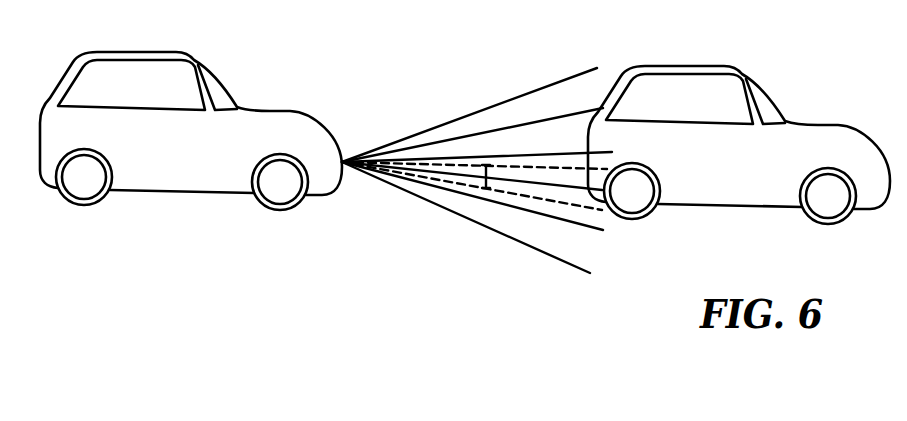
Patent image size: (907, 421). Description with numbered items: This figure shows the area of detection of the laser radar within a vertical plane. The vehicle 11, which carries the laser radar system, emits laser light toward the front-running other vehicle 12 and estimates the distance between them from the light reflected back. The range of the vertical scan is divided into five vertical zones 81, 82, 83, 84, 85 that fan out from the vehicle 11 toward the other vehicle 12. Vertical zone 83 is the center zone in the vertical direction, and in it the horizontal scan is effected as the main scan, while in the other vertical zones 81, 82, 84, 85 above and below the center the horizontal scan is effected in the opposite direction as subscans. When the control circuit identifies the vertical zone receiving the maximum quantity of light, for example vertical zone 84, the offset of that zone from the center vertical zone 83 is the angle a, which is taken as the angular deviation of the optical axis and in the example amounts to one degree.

The vehicle 11 is at (140, 52).
The other vehicle 12 is at (688, 66).
The vertical zone 81 is at (469, 115).
The vertical zone 82 is at (472, 135).
The vertical zone 83 is at (477, 168).
The vertical zone 84 is at (472, 187).
The vertical zone 85 is at (472, 217).
The angle a is at (490, 185).